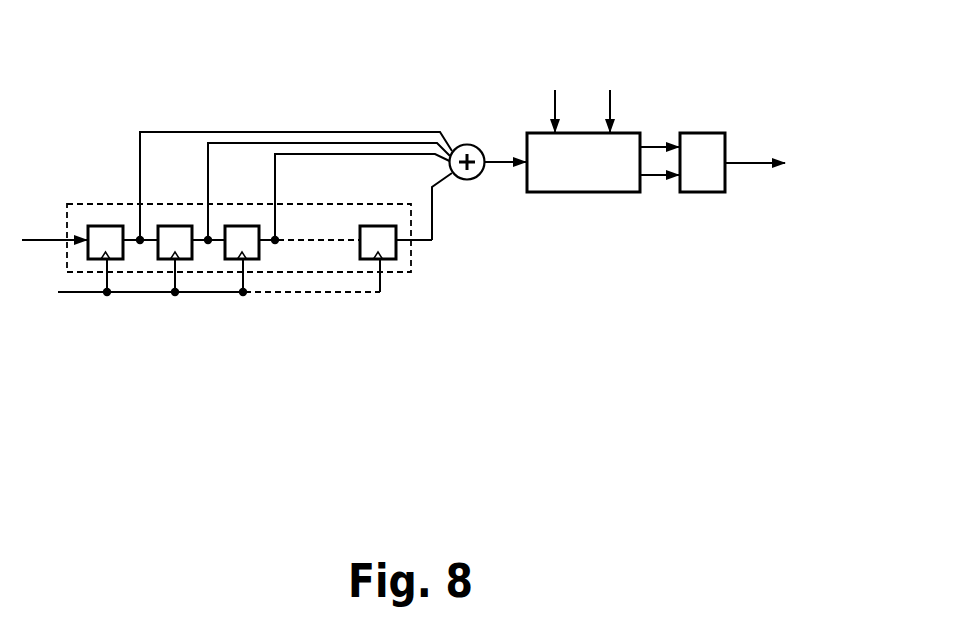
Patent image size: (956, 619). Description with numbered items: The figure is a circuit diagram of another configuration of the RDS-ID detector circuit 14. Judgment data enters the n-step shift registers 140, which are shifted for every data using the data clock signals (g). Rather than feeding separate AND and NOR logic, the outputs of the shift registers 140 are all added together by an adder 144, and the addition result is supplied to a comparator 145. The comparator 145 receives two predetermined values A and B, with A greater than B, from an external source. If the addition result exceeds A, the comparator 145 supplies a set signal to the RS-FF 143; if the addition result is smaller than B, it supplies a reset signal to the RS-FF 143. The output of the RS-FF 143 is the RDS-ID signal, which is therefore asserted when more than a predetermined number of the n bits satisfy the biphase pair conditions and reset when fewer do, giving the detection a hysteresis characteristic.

The RDS-ID detector circuit 14 is at (452, 285).
The shift registers 140 is at (107, 203).
The RS-FF 143 is at (702, 133).
The adder 144 is at (463, 133).
The comparator 145 is at (583, 193).